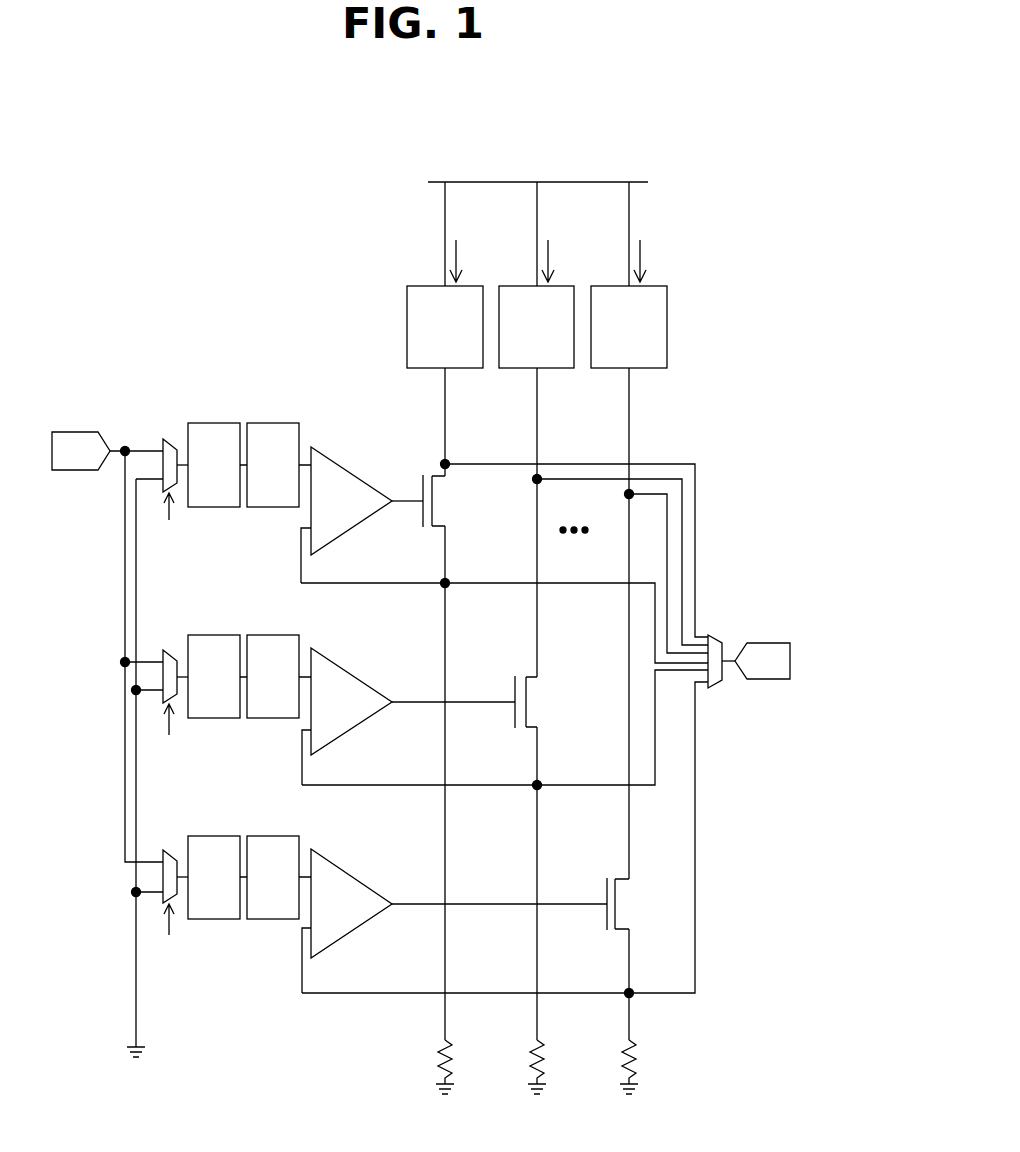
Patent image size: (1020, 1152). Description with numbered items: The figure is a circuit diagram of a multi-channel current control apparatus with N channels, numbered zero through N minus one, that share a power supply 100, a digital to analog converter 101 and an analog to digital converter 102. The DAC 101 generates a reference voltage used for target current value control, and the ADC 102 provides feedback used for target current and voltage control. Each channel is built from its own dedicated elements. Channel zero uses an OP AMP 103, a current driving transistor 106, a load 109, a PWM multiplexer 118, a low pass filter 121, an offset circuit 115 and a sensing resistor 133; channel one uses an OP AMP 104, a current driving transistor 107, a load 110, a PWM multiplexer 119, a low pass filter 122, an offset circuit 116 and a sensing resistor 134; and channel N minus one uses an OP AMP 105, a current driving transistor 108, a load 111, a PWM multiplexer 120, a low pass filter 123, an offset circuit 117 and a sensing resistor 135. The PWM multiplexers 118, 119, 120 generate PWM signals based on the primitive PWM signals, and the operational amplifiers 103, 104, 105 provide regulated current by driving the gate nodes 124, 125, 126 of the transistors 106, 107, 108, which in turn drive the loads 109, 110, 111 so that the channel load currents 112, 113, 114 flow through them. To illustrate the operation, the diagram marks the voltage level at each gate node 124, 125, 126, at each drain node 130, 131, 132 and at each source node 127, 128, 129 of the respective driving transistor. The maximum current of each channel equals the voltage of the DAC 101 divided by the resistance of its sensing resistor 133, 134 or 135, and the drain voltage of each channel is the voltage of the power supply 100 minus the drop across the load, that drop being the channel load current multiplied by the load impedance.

The power supply 100 is at (435, 182).
The digital to analog converter 101 is at (78, 432).
The analog to digital converter 102 is at (770, 643).
The operational amplifier 103 is at (343, 462).
The operational amplifier 104 is at (343, 663).
The operational amplifier 105 is at (343, 865).
The current driving transistor 106 is at (433, 497).
The current driving transistor 107 is at (527, 698).
The current driving transistor 108 is at (618, 900).
The load 109 is at (407, 325).
The load 110 is at (574, 368).
The load 111 is at (667, 325).
The channel load current 112 is at (457, 250).
The channel load current 113 is at (549, 250).
The channel load current 114 is at (641, 250).
The offset generation circuit 115 is at (272, 423).
The offset generation circuit 116 is at (272, 635).
The offset generation circuit 117 is at (272, 836).
The PWM multiplexer 118 is at (175, 443).
The PWM multiplexer 119 is at (175, 654).
The PWM multiplexer 120 is at (175, 854).
The low pass filter 121 is at (222, 423).
The low pass filter 122 is at (222, 635).
The low pass filter 123 is at (222, 836).
The gate node 124 is at (400, 502).
The gate node 125 is at (415, 703).
The gate node 126 is at (415, 905).
The source node 127 is at (447, 587).
The source node 128 is at (539, 788).
The source node 129 is at (632, 990).
The drain node 130 is at (447, 463).
The drain node 131 is at (539, 479).
The drain node 132 is at (631, 493).
The sensing resistor 133 is at (443, 1047).
The sensing resistor 134 is at (535, 1047).
The sensing resistor 135 is at (627, 1047).